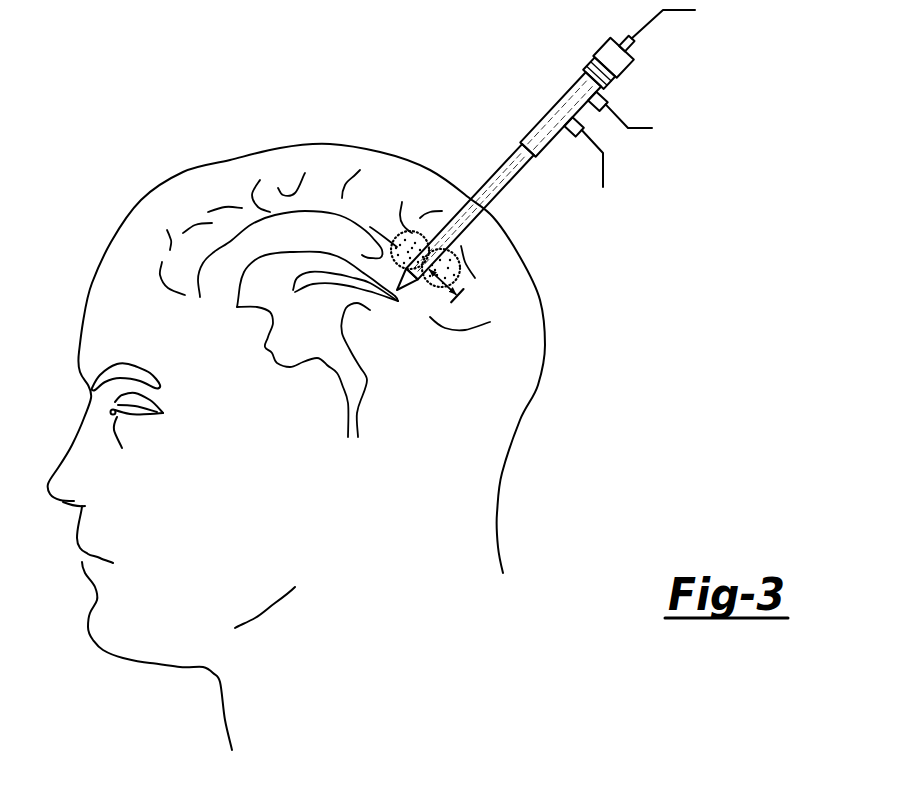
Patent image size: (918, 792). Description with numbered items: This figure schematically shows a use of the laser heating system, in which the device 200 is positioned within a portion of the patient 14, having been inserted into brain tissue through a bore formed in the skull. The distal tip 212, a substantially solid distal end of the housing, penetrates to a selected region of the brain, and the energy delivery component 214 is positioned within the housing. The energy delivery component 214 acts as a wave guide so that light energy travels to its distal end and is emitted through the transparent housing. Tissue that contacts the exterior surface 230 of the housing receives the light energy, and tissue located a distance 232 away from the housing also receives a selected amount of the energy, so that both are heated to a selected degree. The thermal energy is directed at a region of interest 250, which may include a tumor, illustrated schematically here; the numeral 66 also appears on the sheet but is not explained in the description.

The patient head 14 is at (180, 170).
The ablation probe assembly 200 is at (602, 206).
The probe shaft 214 is at (508, 157).
The probe distal tip 212 is at (405, 286).
The target tissue ablation zone 230 is at (403, 243).
The treatment zone 250 is at (461, 260).
The ablation zone dimension 232 is at (450, 287).
The patient 66 is at (401, 784).